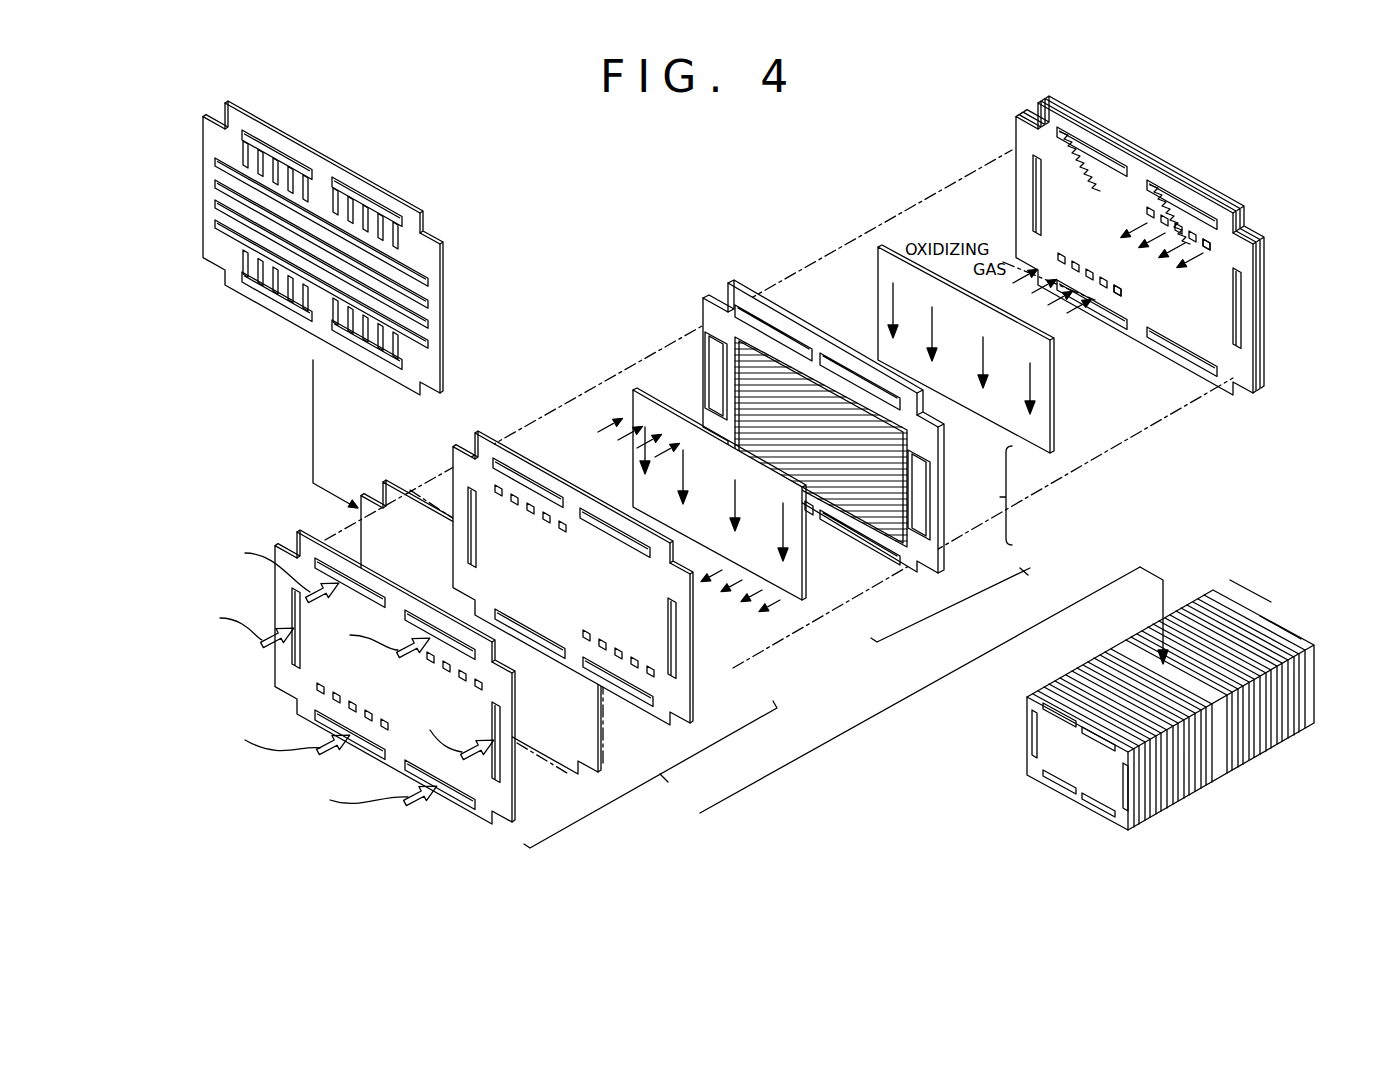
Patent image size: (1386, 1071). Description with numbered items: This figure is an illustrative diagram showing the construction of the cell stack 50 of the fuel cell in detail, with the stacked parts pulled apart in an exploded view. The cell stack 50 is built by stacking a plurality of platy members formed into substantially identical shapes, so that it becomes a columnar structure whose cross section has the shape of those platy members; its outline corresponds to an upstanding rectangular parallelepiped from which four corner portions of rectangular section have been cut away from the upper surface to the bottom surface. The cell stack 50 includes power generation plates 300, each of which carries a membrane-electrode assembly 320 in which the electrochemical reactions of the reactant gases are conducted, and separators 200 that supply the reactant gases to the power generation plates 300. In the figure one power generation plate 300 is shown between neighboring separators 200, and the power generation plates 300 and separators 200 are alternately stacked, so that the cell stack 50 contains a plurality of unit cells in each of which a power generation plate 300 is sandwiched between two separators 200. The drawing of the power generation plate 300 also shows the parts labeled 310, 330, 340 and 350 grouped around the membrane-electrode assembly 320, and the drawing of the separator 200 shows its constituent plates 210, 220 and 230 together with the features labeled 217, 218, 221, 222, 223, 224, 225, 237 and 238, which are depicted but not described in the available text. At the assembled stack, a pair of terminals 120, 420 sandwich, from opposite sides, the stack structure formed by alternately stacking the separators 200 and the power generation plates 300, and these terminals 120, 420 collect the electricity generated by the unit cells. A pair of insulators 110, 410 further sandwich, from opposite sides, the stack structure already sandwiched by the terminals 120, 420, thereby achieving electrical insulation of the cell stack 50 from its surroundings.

The cell stack 50 is at (1032, 682).
The insulator 110 is at (1138, 815).
The terminal 120 is at (1147, 812).
The separator 200 is at (1255, 403).
The anode-side plate of separator 210 is at (520, 799).
The coolant flow holes 217 is at (1216, 243).
The oxidizing gas flow holes 218 is at (1107, 287).
The intermediate plate of separator 220 is at (439, 433).
The hydrogen supply slits 221 is at (253, 143).
The hydrogen exhaust slits 222 is at (373, 357).
The oxidizing gas supply slits 223 is at (342, 197).
The oxidizing gas exhaust slits 224 is at (257, 290).
The coolant flow slits 225 is at (427, 313).
The cathode-side plate of separator 230 is at (572, 578).
The fuel gas supply holes 237 is at (493, 487).
The fuel gas exhaust holes 238 is at (647, 667).
The power generation plate 300 is at (973, 605).
The anode-side porous body 310 is at (800, 583).
The membrane-electrode assembly 320 is at (862, 480).
The cathode-side porous body 330 is at (1050, 453).
The seal gasket frame 340 is at (858, 426).
The seal-integrated MEA 350 is at (1038, 495).
The insulator 410 is at (1283, 633).
The terminal 420 is at (1245, 623).